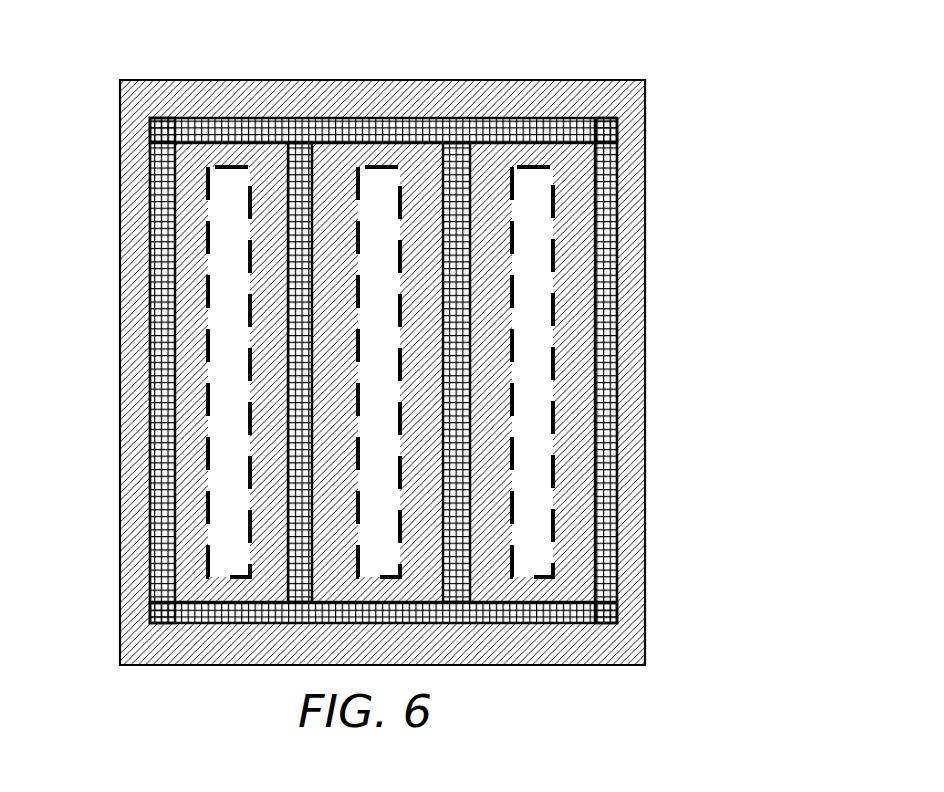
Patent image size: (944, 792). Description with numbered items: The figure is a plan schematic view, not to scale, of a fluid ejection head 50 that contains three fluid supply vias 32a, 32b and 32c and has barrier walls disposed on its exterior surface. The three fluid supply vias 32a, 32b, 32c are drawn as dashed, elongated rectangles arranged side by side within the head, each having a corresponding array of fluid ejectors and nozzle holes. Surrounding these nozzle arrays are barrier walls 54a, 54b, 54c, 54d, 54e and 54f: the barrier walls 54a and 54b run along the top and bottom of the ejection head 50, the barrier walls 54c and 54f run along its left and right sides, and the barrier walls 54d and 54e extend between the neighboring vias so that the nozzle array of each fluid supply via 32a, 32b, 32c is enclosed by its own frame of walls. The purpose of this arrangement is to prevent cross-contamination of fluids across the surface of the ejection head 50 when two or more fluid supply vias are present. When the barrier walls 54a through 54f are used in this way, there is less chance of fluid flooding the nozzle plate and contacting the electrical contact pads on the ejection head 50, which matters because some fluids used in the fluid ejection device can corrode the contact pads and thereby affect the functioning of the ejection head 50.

The ejection head 50 is at (672, 181).
The fluid supply via 32a is at (220, 425).
The fluid supply via 32b is at (385, 213).
The fluid supply via 32c is at (527, 485).
The barrier wall 54a is at (493, 137).
The barrier wall 54b is at (217, 607).
The barrier wall 54c is at (160, 277).
The barrier wall 54d is at (300, 190).
The barrier wall 54e is at (453, 163).
The barrier wall 54f is at (607, 347).